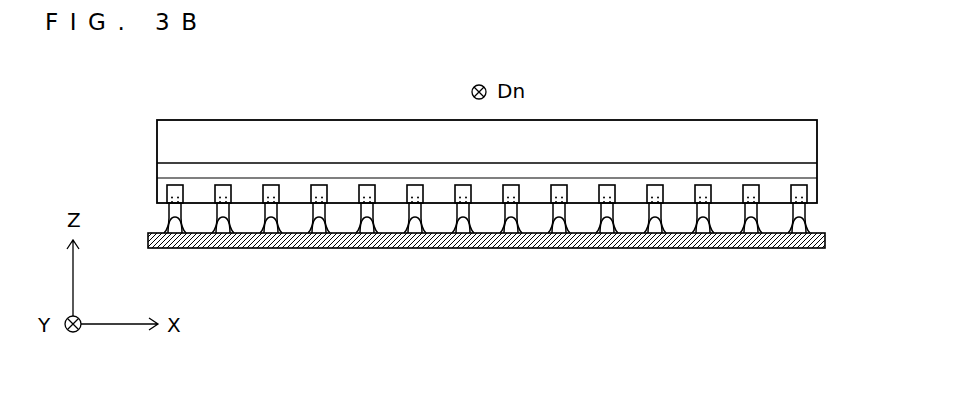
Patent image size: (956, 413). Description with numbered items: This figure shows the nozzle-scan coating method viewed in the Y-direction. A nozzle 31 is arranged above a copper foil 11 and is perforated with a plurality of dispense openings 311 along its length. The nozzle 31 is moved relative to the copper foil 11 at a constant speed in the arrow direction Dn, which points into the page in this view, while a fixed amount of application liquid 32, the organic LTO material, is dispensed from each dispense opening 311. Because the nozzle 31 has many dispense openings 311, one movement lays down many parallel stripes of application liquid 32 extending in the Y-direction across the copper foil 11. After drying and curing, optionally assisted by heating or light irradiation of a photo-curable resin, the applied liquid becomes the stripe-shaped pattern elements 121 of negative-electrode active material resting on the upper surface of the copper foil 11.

The copper foil 11 is at (655, 248).
The stripe-shaped pattern elements 121 is at (277, 228).
The nozzle 31 is at (413, 121).
The dispense openings 311 is at (310, 194).
The application liquid 32 is at (166, 210).